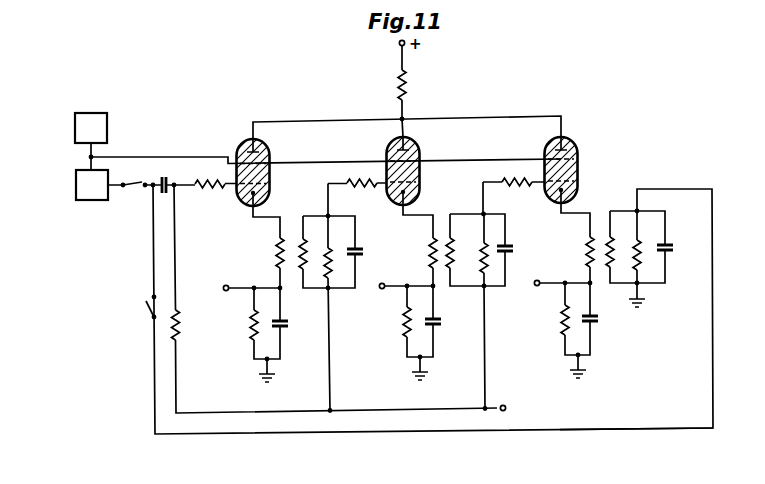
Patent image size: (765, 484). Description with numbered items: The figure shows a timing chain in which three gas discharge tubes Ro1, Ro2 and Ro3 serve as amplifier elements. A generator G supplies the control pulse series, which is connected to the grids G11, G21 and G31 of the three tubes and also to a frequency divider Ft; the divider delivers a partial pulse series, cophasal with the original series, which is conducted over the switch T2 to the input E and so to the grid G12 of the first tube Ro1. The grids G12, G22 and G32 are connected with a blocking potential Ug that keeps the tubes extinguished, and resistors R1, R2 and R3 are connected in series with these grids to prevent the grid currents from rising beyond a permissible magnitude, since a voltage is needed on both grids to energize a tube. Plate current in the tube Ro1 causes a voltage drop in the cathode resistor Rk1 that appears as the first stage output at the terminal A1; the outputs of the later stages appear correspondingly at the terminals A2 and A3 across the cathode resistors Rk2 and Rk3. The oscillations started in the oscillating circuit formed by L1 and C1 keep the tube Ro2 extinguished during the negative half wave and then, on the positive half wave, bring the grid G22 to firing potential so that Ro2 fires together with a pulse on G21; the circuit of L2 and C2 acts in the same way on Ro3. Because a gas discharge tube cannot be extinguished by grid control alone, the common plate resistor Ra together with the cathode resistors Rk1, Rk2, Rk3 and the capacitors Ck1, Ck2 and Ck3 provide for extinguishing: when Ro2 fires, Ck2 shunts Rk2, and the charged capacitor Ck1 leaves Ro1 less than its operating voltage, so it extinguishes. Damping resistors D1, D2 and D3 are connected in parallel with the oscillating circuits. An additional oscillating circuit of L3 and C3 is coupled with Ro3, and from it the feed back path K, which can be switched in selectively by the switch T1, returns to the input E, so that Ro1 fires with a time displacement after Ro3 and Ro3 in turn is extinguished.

The generator G is at (117, 110).
The frequency divider Ft is at (80, 208).
The switch T1 is at (147, 313).
The switch T2 is at (134, 190).
The input E is at (156, 180).
The resistor R1 is at (210, 195).
The resistor R2 is at (362, 194).
The resistor R3 is at (517, 193).
The common plate resistor Ra is at (414, 85).
The gas discharge tube Ro1 is at (267, 172).
The gas discharge tube Ro2 is at (418, 171).
The gas discharge tube Ro3 is at (576, 169).
The grid G11 is at (268, 163).
The grid G12 is at (268, 185).
The grid G21 is at (417, 162).
The grid G22 is at (419, 183).
The grid G31 is at (575, 160).
The grid G32 is at (576, 182).
The output terminal A1 is at (217, 293).
The output terminal A2 is at (373, 292).
The output terminal A3 is at (527, 290).
The cathode resistor Rk1 is at (238, 325).
The cathode resistor Rk2 is at (391, 322).
The cathode resistor Rk3 is at (549, 320).
The capacitor Ck1 is at (295, 327).
The capacitor Ck2 is at (448, 325).
The capacitor Ck3 is at (605, 322).
The inductance of oscillating circuit L1 is at (312, 255).
The inductance of oscillating circuit L2 is at (459, 253).
The inductance of oscillating circuit L3 is at (619, 252).
The damping resistor D1 is at (337, 254).
The damping resistor D2 is at (493, 250).
The damping resistor D3 is at (646, 248).
The capacitor of oscillating circuit C1 is at (365, 256).
The capacitor of oscillating circuit C2 is at (515, 253).
The capacitor of oscillating circuit C3 is at (675, 251).
The blocking potential Ug is at (518, 409).
The feed back path K is at (636, 421).